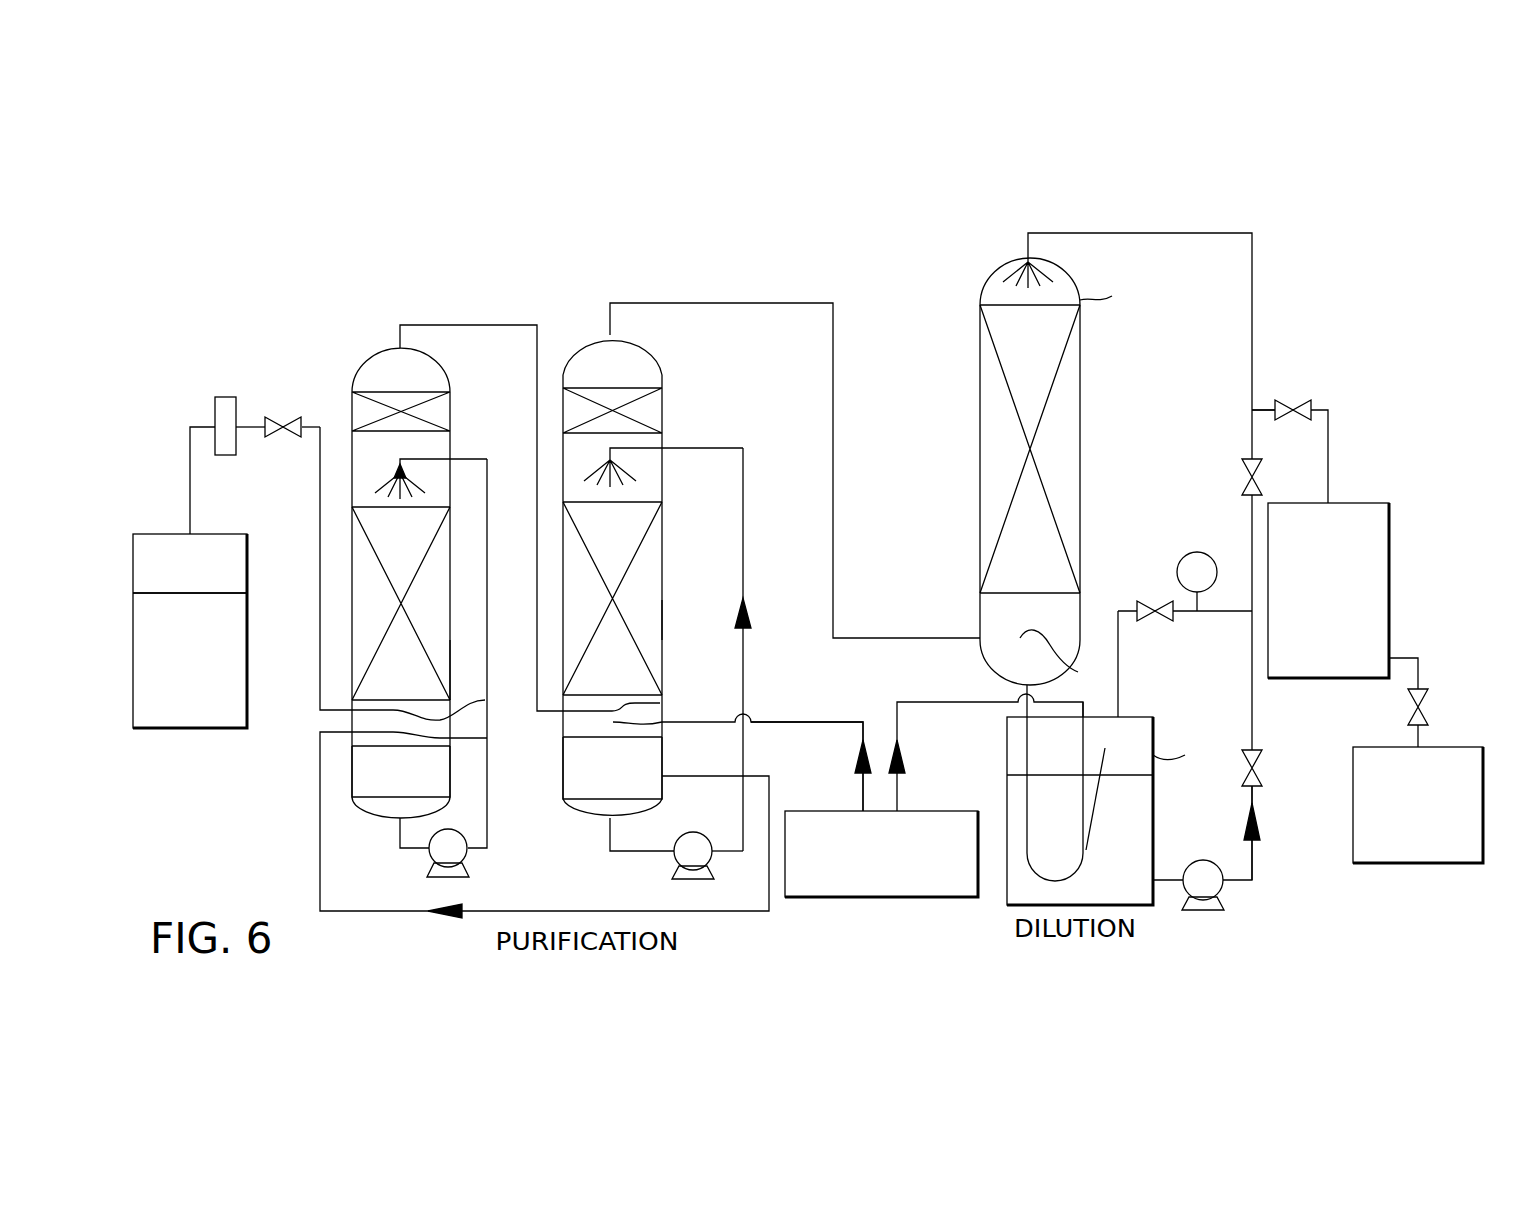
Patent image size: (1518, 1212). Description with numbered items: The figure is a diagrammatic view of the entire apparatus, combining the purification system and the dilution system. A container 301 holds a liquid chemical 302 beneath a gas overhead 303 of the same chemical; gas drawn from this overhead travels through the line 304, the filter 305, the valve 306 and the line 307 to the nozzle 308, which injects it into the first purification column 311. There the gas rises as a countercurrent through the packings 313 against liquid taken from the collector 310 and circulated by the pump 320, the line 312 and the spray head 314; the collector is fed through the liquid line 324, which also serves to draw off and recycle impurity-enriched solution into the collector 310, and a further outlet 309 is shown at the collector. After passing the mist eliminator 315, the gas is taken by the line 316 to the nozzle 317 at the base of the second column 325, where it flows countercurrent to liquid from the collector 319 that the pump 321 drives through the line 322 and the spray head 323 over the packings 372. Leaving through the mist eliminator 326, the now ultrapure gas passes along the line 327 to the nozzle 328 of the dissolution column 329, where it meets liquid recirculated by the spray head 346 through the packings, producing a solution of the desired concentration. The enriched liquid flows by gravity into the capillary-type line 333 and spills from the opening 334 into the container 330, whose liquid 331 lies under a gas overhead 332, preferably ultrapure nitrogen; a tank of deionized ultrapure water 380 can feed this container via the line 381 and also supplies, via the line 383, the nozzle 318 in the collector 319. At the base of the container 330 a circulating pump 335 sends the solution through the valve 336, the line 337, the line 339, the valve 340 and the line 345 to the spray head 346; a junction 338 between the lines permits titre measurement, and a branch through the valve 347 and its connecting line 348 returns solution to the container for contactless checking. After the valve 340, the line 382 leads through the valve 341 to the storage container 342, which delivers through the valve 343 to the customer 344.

The container 301 is at (250, 654).
The liquid chemical 302 is at (193, 728).
The gas overhead 303 is at (235, 558).
The line 304 is at (192, 492).
The filter 305 is at (226, 397).
The valve 306 is at (287, 418).
The line 307 is at (320, 557).
The nozzle 308 is at (485, 700).
The outlet of first column 309 is at (487, 738).
The collector 310 is at (442, 777).
The first purification column 311 is at (451, 648).
The line 312 is at (488, 585).
The packings 313 is at (443, 552).
The spray head 314 is at (396, 466).
The mist eliminator 315 is at (442, 412).
The line 316 is at (456, 324).
The nozzle 317 is at (660, 703).
The nozzle 318 is at (662, 731).
The collector 319 is at (653, 785).
The pump 320 is at (460, 853).
The pump 321 is at (680, 855).
The line 322 is at (746, 643).
The spray head 323 is at (620, 470).
The liquid line 324 is at (402, 910).
The second column 325 is at (663, 552).
The mist eliminator 326 is at (653, 412).
The line 327 is at (790, 303).
The nozzle 328 is at (1066, 741).
The dissolution column 329 is at (1067, 488).
The container 330 is at (1012, 810).
The liquid 331 is at (1140, 852).
The gas overhead 332 is at (1140, 733).
The capillary-type line 333 is at (1093, 807).
The opening 334 is at (1100, 762).
The circulating pump 335 is at (1213, 882).
The valve 336 is at (1258, 769).
The line 337 is at (1248, 703).
The junction 338 is at (1230, 607).
The line 339 is at (1250, 515).
The valve 340 is at (1243, 477).
The valve 341 is at (1298, 404).
The storage container 342 is at (1355, 508).
The valve 343 is at (1408, 700).
The customer 344 is at (1360, 830).
The line 345 is at (1252, 298).
The spray head 346 is at (1035, 265).
The valve 347 is at (1162, 600).
The pipe 348 is at (1118, 690).
The packings 372 is at (655, 612).
The tank of deionized ultrapure water 380 is at (822, 811).
The line 381 is at (905, 712).
The line 382 is at (1260, 412).
The line 383 is at (803, 722).